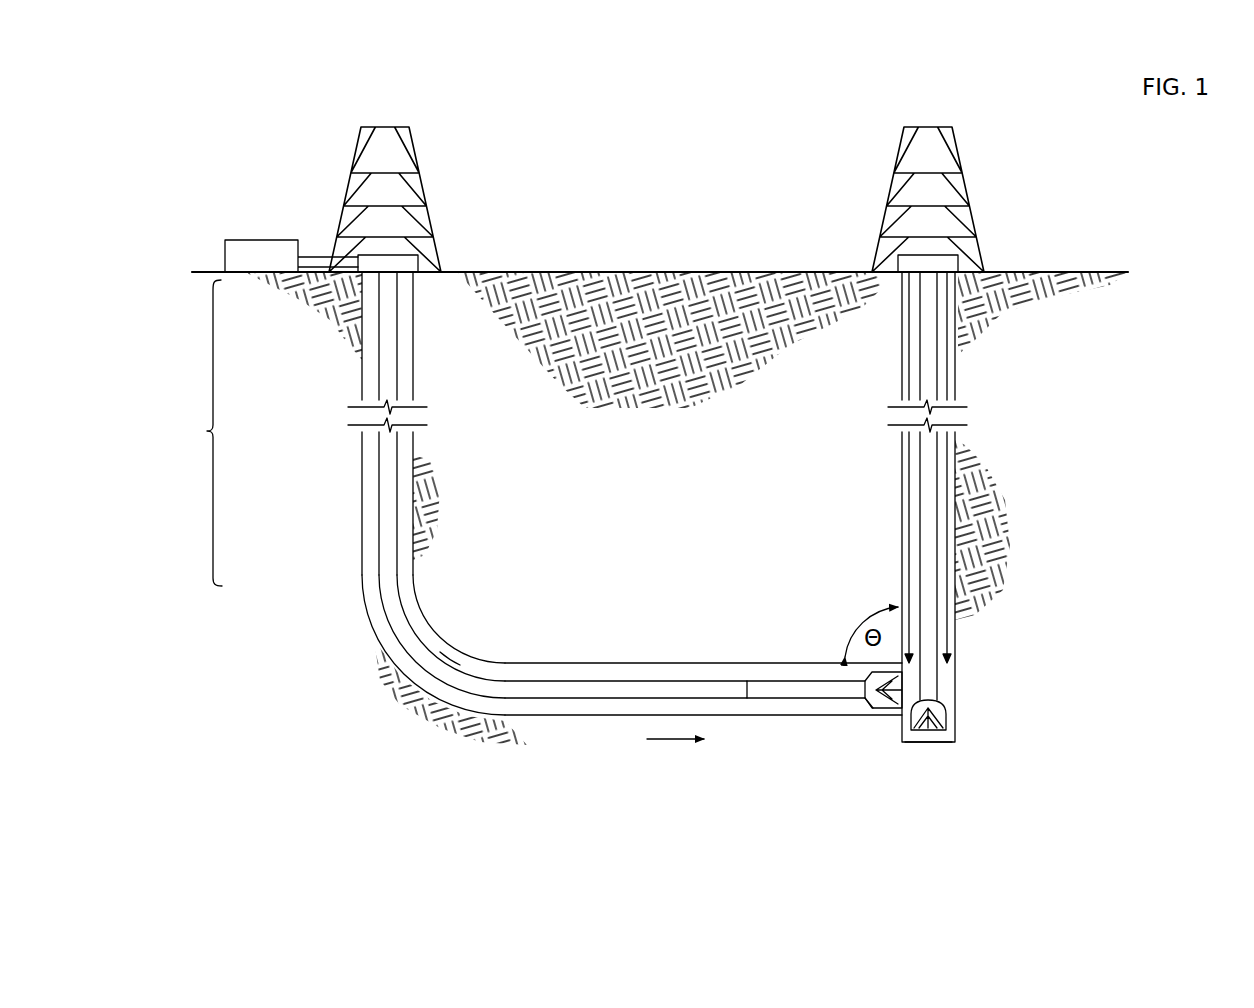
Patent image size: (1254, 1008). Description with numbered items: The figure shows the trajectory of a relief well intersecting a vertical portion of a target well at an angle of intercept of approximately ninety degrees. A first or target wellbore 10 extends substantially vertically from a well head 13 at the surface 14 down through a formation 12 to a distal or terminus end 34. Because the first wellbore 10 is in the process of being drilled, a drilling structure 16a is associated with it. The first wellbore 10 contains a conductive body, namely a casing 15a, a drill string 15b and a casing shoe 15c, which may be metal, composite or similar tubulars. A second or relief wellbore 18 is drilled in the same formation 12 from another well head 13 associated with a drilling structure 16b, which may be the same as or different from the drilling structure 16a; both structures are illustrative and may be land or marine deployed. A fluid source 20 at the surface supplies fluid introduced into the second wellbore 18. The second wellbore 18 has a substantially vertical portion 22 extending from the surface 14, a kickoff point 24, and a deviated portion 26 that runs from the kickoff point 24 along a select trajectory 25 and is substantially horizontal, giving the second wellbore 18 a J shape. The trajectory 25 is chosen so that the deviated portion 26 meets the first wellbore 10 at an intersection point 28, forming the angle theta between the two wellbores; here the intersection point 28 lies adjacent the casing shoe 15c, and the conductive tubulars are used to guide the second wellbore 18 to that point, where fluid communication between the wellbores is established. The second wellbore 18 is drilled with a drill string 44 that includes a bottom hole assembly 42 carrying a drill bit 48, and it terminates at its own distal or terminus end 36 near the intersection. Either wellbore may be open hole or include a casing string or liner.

The first wellbore 10 is at (970, 378).
The formation 12 is at (648, 363).
The well head 13 is at (330, 268).
The surface 14 is at (1080, 272).
The casing 15a is at (905, 476).
The drill string 15b is at (925, 546).
The casing shoe 15c is at (953, 662).
The drilling structure 16a is at (897, 160).
The drilling structure 16b is at (353, 160).
The second wellbore 18 is at (415, 353).
The fluid source 20 is at (248, 240).
The substantially vertical portion 22 is at (207, 431).
The kickoff point 24 is at (362, 560).
The trajectory 25 is at (670, 742).
The deviated portion 26 is at (623, 663).
The intersection point 28 is at (903, 680).
The terminus end 34 is at (932, 742).
The terminus end 36 is at (946, 703).
The bottom hole assembly 42 is at (778, 681).
The drill string 44 is at (437, 652).
The drill bit 48 is at (868, 712).